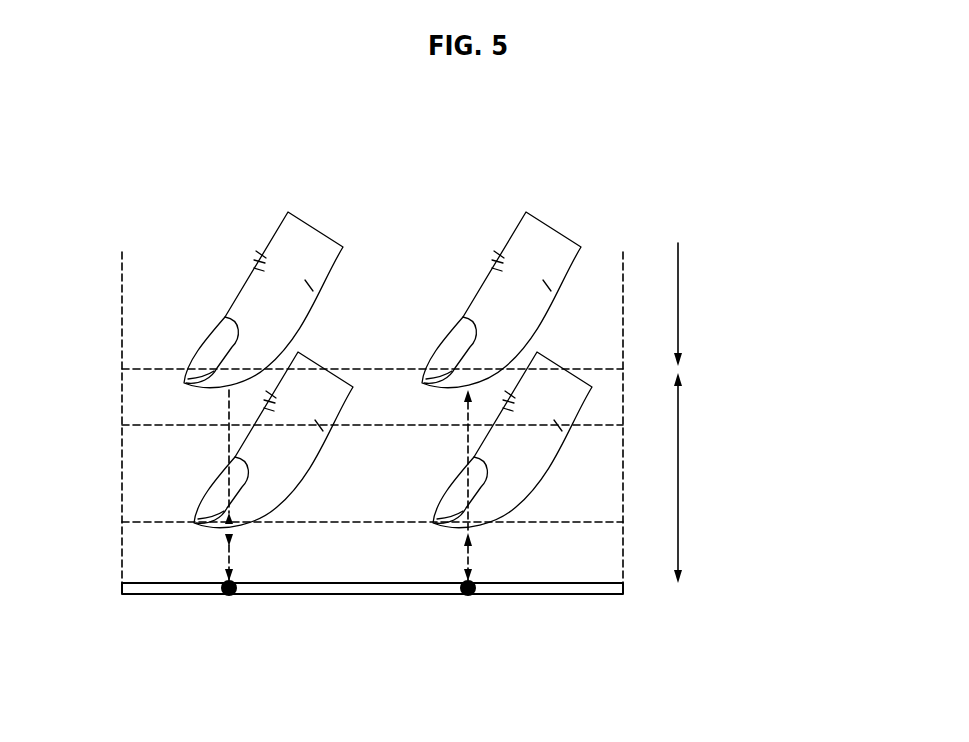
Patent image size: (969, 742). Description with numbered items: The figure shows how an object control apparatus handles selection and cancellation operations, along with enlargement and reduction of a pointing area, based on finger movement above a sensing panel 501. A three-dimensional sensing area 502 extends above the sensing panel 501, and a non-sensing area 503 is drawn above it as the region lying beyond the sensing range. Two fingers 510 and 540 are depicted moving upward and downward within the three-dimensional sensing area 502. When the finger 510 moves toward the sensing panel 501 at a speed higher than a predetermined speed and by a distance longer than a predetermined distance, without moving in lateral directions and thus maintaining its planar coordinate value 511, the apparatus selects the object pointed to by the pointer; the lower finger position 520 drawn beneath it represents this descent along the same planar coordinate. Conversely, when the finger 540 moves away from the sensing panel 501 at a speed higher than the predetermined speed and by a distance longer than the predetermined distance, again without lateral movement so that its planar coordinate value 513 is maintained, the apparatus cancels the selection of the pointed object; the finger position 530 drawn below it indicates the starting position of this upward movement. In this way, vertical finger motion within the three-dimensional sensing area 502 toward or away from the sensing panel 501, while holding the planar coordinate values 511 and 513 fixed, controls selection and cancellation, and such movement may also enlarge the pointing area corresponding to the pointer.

The sensing panel 501 is at (145, 590).
The 3D sensing area 502 is at (780, 455).
The non-sensing area 503 is at (780, 270).
The finger 510 is at (317, 227).
The planar coordinate value 511 is at (229, 640).
The planar coordinate value 513 is at (468, 640).
The first finger in sensing area 520 is at (236, 441).
The second finger in sensing area 530 is at (470, 444).
The finger 540 is at (557, 223).